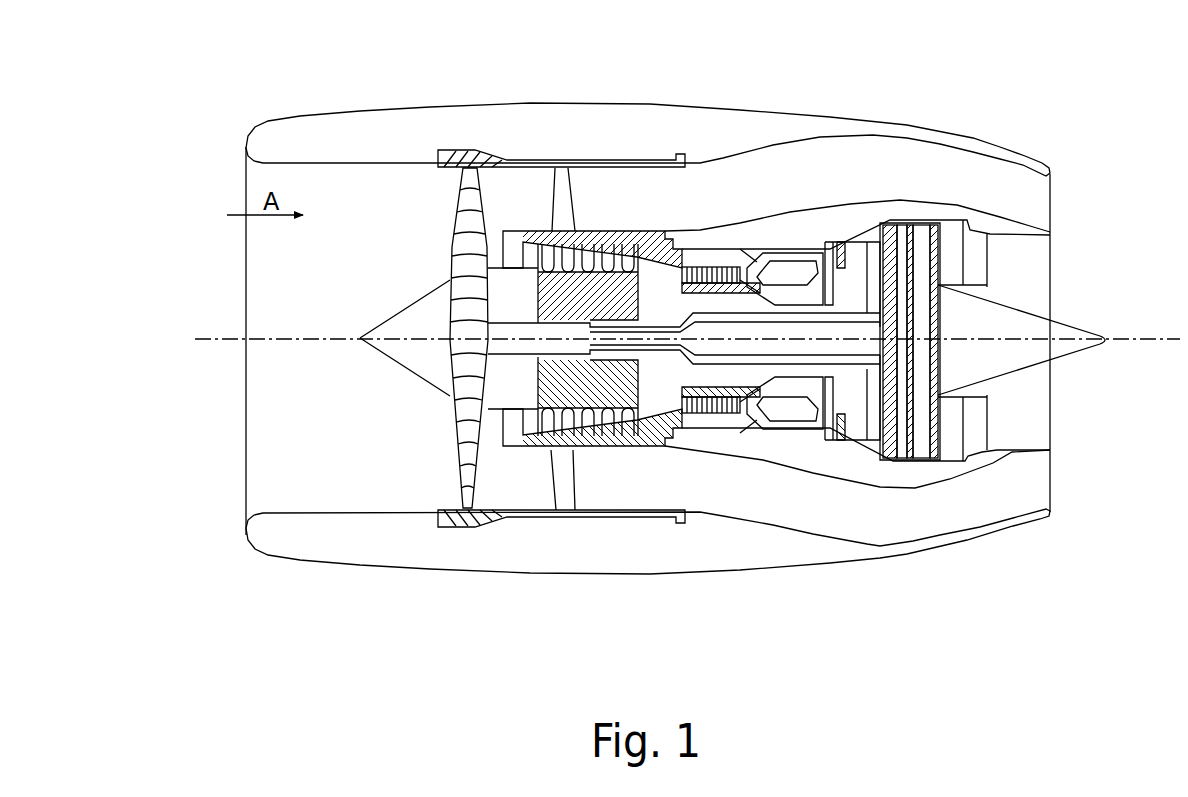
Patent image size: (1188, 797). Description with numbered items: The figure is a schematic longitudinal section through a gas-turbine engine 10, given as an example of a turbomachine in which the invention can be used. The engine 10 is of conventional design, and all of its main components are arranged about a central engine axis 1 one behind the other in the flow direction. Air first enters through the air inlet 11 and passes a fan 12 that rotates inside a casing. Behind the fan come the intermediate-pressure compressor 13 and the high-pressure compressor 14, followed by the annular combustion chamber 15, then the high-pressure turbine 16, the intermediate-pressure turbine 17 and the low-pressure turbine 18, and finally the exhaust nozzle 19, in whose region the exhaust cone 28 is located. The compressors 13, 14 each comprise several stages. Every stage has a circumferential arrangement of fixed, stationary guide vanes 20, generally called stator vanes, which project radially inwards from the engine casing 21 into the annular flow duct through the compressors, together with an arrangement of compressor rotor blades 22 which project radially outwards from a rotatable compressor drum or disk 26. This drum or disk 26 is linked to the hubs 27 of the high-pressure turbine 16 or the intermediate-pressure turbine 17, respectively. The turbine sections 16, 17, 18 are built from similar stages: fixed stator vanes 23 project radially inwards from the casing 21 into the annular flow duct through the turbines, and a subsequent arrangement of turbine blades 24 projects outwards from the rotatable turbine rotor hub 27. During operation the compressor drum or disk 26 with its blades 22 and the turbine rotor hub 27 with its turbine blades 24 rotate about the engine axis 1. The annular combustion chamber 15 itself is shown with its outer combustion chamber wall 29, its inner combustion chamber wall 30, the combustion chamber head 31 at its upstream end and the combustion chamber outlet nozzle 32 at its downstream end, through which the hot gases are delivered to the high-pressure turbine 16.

The engine axis 1 is at (317, 340).
The gas-turbine engine 10 is at (804, 167).
The air inlet 11 is at (397, 212).
The fan 12 is at (458, 148).
The intermediate-pressure compressor 13 is at (613, 230).
The high-pressure compressor 14 is at (715, 220).
The annular combustion chamber 15 is at (803, 255).
The high-pressure turbine 16 is at (873, 242).
The intermediate-pressure turbine 17 is at (943, 223).
The low-pressure turbine 18 is at (967, 162).
The exhaust nozzle 19 is at (975, 277).
The guide vanes 20 is at (553, 450).
The engine casing 21 is at (577, 450).
The compressor rotor blades 22 is at (610, 450).
The stator vanes 23 is at (913, 462).
The turbine blades 24 is at (950, 397).
The compressor drum or disk 26 is at (697, 383).
The turbine rotor hub 27 is at (940, 387).
The exhaust cone 28 is at (1060, 334).
The outer combustion chamber wall 29 is at (757, 258).
The inner combustion chamber wall 30 is at (753, 392).
The combustion chamber head 31 is at (719, 262).
The combustion chamber outlet nozzle 32 is at (823, 253).